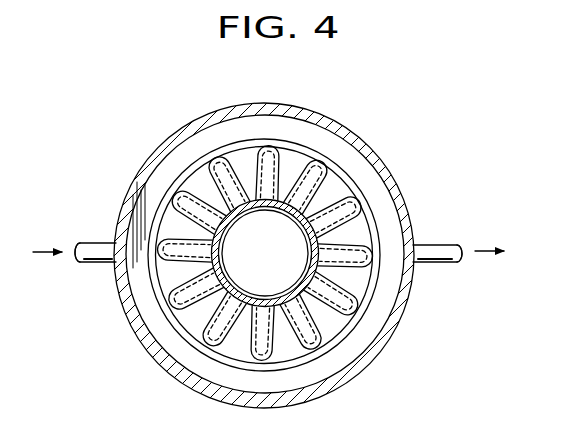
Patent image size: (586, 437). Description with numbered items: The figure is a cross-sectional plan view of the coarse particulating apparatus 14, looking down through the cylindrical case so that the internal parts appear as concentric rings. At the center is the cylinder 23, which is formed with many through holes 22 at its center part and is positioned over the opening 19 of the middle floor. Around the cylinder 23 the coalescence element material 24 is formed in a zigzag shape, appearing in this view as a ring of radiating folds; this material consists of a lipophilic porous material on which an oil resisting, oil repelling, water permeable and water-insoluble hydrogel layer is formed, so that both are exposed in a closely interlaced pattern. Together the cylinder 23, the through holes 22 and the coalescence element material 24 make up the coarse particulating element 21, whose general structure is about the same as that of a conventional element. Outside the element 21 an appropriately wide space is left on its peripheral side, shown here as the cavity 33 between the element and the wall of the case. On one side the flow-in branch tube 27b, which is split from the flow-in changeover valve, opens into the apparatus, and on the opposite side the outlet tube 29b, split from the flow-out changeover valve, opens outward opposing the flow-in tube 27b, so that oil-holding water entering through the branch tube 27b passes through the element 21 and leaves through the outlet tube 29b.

The coarse particulating apparatus 14 is at (170, 128).
The cavity 33 is at (385, 207).
The coarse particulating element 21 is at (329, 190).
The coalescence element material 24 is at (279, 150).
The opening 19 is at (287, 280).
The cylinder 23 is at (221, 284).
The through holes 22 is at (221, 284).
The branch tube 27b is at (92, 263).
The outlet tube 29b is at (433, 263).